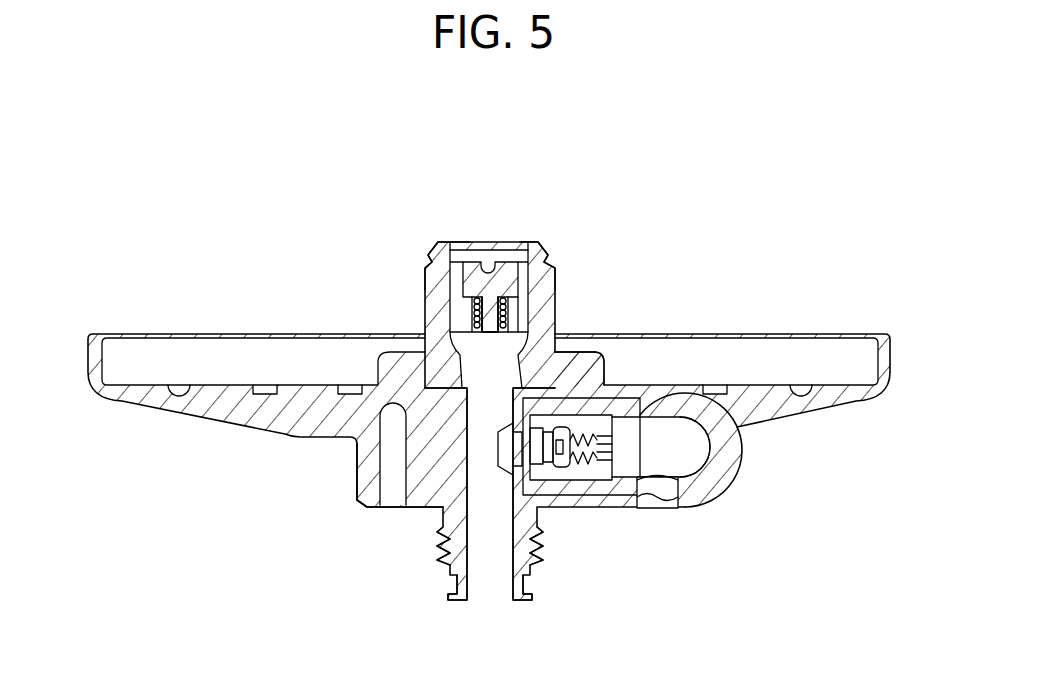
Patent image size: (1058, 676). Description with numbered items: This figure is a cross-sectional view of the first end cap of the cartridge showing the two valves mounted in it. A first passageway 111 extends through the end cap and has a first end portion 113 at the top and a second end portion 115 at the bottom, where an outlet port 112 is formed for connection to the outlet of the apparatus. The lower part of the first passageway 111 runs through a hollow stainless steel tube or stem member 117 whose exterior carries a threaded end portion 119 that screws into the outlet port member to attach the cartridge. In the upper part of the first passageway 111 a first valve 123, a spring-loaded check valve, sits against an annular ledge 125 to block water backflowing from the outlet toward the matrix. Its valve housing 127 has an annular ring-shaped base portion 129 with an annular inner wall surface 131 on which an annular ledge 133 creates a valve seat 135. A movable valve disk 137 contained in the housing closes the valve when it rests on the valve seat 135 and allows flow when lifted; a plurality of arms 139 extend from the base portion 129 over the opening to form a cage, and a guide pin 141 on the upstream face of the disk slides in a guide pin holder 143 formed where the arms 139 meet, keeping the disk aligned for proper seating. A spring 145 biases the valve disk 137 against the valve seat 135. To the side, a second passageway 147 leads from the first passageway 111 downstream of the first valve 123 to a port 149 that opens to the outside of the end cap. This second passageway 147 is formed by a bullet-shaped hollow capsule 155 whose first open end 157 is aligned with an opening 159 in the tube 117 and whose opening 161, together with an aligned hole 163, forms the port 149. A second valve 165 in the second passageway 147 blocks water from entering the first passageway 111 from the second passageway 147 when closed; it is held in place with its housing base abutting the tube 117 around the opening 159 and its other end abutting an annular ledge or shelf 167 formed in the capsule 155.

The first valve 123 is at (455, 182).
The first end portion 113 is at (500, 250).
The annular ring-shaped base portion 129 is at (452, 262).
The valve seat 135 is at (540, 262).
The annular ledge 133 is at (458, 278).
The valve housing 127 is at (525, 272).
The annular inner wall surface 131 is at (508, 284).
The movable valve disk 137 is at (472, 312).
The arms 139 is at (522, 316).
The spring 145 is at (480, 314).
The annular ledge 125 is at (545, 353).
The guide pin 141 is at (490, 327).
The guide pin holder 143 is at (514, 336).
The second valve 165 is at (594, 414).
The annular ledge or shelf 167 is at (641, 418).
The opening 161 is at (654, 476).
The second passageway 147 is at (692, 446).
The bullet-shaped hollow capsule 155 is at (702, 482).
The port 149 is at (650, 508).
The hole 163 is at (668, 506).
The opening 159 is at (503, 452).
The first open end 157 is at (513, 470).
The tube or stem member 117 is at (390, 486).
The first passageway 111 is at (470, 532).
The threaded end portion 119 is at (545, 548).
The second end portion 115 is at (475, 601).
The outlet port 112 is at (502, 601).